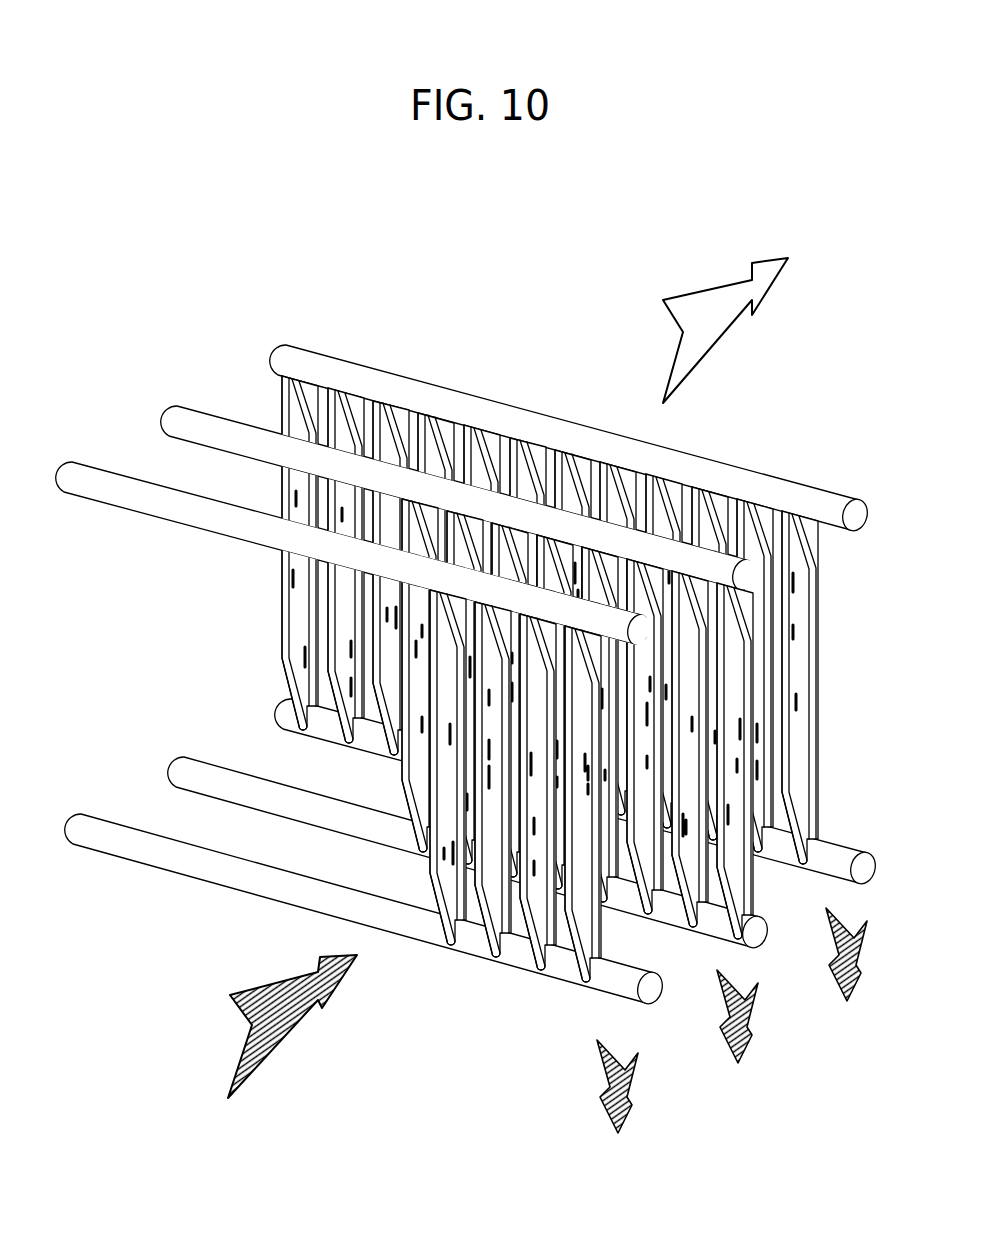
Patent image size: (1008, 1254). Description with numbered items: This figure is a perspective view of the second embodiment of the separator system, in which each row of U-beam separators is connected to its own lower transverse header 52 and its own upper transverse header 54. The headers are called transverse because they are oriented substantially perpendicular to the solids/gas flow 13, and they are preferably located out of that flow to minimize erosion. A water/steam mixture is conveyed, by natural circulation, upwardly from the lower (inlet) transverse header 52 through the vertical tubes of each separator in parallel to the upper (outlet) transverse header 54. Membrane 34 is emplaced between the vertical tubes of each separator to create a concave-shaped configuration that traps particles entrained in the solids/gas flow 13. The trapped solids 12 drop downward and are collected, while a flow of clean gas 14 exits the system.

The upper transverse header 54 is at (73, 463).
The lower transverse header 52 is at (77, 813).
The membrane 34 is at (338, 610).
The clean gas 14 is at (722, 393).
The solids/gas flow 13 is at (263, 1052).
The solids 12 is at (832, 943).